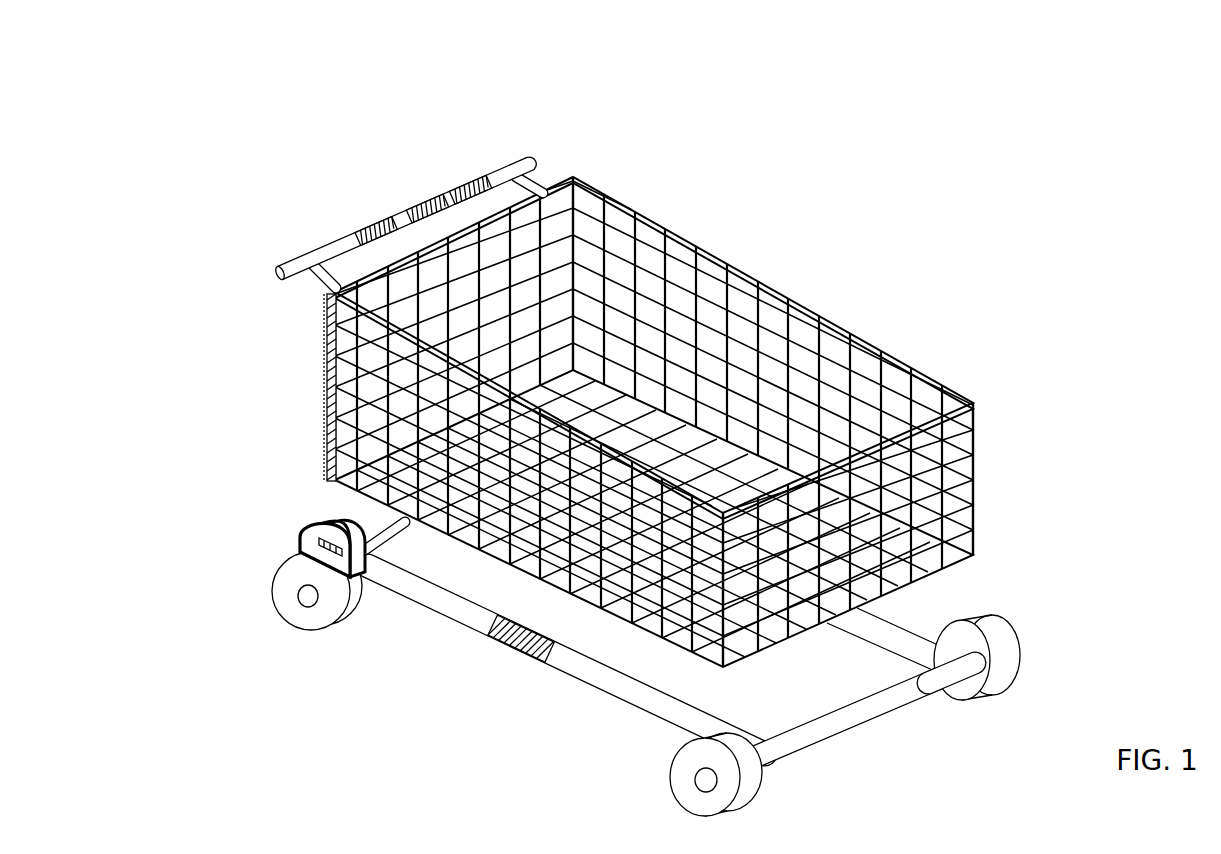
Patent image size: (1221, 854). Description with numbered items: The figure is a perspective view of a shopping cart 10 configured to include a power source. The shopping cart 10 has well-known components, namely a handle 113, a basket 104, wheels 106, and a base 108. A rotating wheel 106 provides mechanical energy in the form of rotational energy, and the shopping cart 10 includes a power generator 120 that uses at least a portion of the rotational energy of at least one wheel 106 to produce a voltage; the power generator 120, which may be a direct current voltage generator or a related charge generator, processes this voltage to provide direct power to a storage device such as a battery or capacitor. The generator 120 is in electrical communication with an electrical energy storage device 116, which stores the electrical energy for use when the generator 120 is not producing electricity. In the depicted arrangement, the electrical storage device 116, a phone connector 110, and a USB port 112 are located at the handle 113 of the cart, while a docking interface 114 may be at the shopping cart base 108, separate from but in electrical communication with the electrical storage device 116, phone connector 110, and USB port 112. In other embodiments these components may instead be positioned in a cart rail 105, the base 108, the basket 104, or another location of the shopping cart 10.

The shopping cart 10 is at (824, 176).
The basket 104 is at (847, 330).
The cart rail 105 is at (323, 423).
The wheel 106 is at (317, 620).
The base 108 is at (597, 680).
The phone connector 110 is at (367, 222).
The USB port 112 is at (413, 200).
The handle 113 is at (518, 158).
The docking interface 114 is at (500, 642).
The electrical energy storage device 116 is at (467, 175).
The power generator 120 is at (322, 542).